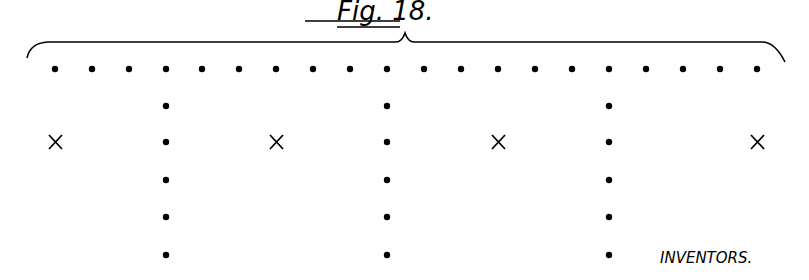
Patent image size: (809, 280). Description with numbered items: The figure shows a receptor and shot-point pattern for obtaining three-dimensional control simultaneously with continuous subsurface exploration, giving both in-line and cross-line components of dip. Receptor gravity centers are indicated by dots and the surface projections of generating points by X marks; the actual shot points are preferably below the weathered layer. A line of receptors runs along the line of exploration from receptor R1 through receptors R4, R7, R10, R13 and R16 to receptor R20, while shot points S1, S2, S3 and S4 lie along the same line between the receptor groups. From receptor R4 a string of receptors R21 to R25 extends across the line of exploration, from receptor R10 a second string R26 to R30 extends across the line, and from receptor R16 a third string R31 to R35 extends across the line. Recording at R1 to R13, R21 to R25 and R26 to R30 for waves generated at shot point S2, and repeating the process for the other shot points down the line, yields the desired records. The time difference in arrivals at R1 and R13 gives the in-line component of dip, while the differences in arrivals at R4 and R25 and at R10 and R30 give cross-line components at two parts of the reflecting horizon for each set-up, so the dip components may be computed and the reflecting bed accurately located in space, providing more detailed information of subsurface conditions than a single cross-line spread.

The receptor R1 is at (55, 61).
The receptor R4 is at (167, 61).
The receptor R7 is at (279, 61).
The receptor R10 is at (393, 61).
The receptor R13 is at (504, 61).
The receptor R16 is at (615, 61).
The receptor R20 is at (762, 61).
The receptor R21 is at (177, 104).
The receptor R25 is at (177, 253).
The receptor R26 is at (398, 104).
The receptor R30 is at (398, 253).
The receptor R31 is at (620, 104).
The receptor R35 is at (620, 253).
The shot point S1 is at (54, 152).
The shot point S2 is at (275, 152).
The shot point S3 is at (497, 152).
The shot point S4 is at (756, 152).